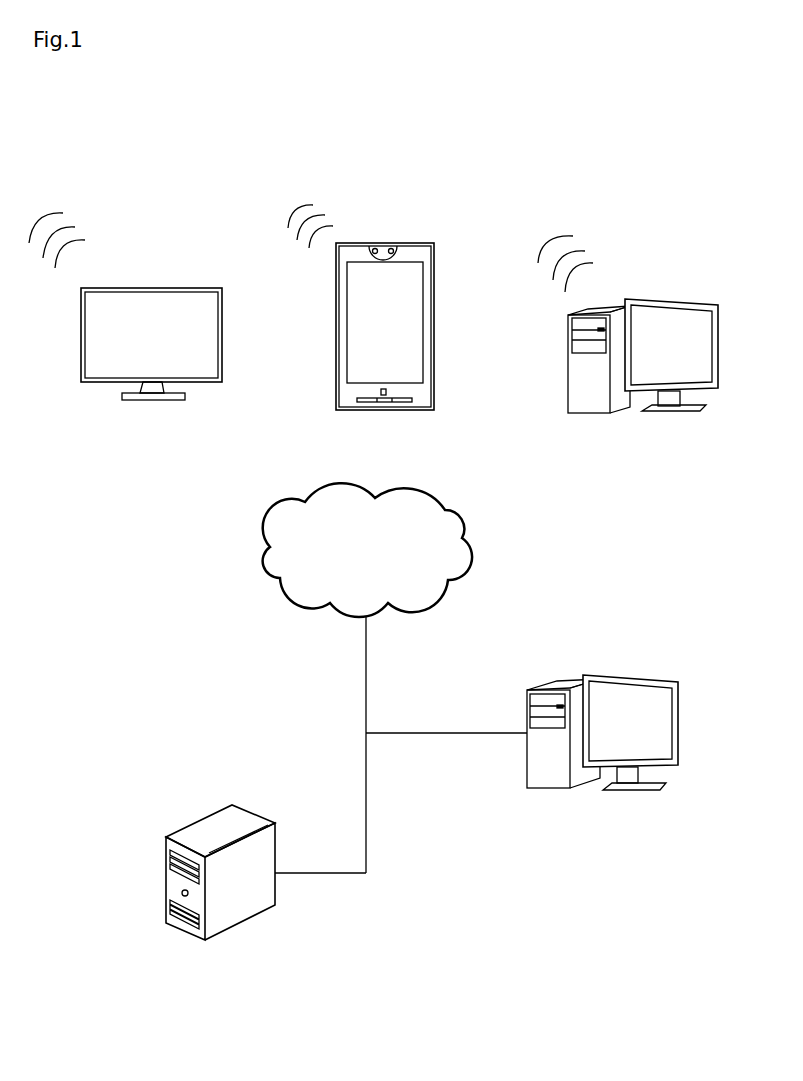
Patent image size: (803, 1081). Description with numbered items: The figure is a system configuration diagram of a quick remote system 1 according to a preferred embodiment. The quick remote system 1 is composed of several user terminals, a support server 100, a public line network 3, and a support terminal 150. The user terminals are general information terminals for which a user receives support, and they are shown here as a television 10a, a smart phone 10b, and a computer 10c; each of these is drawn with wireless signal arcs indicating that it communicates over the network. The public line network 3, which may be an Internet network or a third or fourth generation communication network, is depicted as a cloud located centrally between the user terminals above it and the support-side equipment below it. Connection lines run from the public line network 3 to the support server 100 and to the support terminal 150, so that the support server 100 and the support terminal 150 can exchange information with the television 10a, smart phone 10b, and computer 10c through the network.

The quick remote system 1 is at (661, 935).
The public line network 3 is at (438, 497).
The television 10a is at (104, 288).
The smart phone 10b is at (380, 243).
The computer 10c is at (662, 300).
The support server 100 is at (232, 802).
The support terminal 150 is at (662, 680).